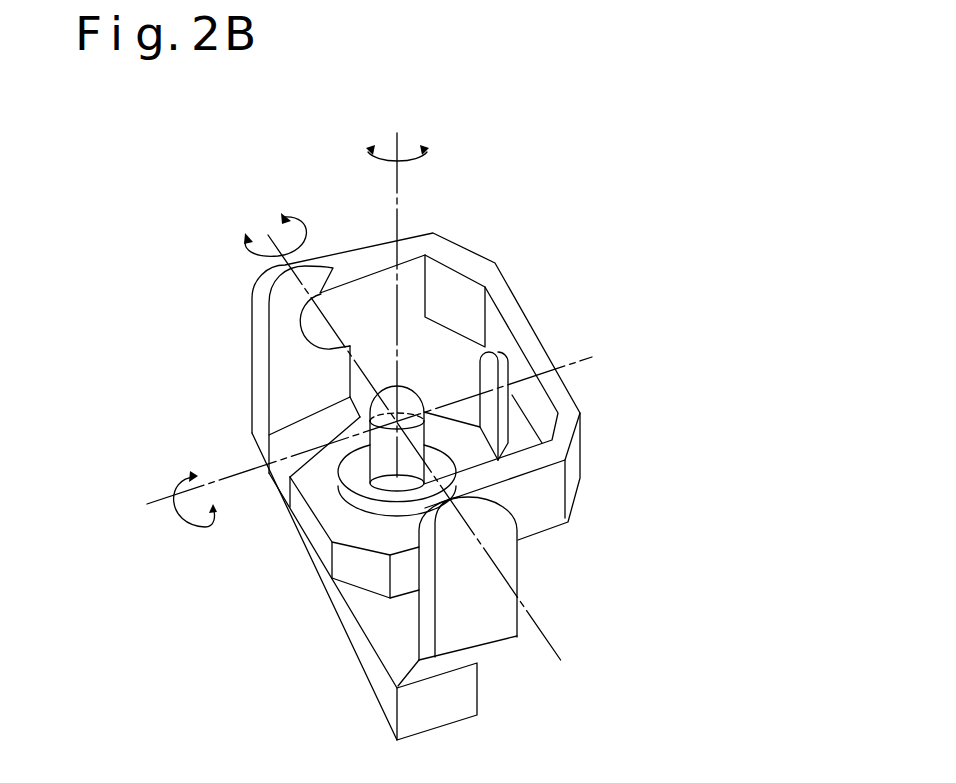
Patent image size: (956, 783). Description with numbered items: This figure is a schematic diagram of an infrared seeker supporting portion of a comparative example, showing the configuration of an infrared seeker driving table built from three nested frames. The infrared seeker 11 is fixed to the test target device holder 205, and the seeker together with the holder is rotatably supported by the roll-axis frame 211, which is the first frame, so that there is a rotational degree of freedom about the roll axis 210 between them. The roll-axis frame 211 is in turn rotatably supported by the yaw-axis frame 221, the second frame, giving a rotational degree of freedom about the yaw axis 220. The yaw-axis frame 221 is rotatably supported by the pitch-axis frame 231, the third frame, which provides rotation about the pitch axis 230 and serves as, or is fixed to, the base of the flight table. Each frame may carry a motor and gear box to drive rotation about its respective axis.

The infrared seeker 11 is at (370, 442).
The test target device holder 205 is at (352, 487).
The roll axis 210 is at (397, 288).
The roll-axis frame 211 is at (347, 572).
The yaw axis 220 is at (316, 442).
The yaw-axis frame 221 is at (475, 262).
The pitch axis 230 is at (372, 424).
The pitch-axis frame 231 is at (472, 700).